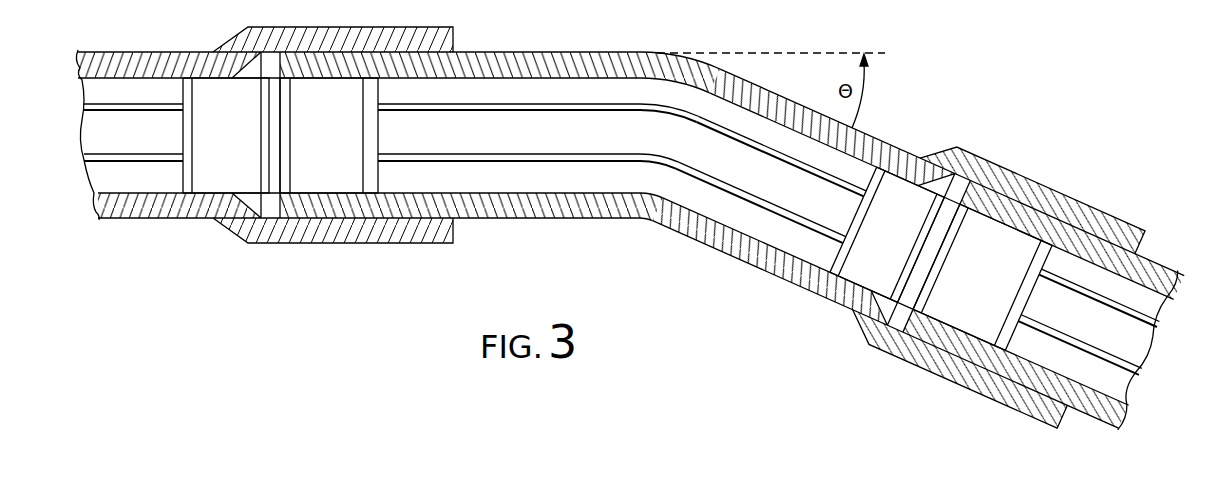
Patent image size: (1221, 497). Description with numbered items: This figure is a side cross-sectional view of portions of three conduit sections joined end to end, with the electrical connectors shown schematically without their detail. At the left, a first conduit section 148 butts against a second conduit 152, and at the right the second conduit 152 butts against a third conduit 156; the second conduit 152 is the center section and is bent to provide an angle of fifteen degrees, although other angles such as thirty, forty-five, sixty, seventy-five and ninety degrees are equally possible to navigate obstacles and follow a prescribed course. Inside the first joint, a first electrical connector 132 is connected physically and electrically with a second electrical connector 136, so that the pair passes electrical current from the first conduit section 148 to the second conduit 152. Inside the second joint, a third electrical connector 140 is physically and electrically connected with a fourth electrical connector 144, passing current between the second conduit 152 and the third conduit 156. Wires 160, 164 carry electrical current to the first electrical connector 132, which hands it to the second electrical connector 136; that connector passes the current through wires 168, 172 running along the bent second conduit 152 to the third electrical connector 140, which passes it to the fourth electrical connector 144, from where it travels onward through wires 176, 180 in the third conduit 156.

The first electrical connector 132 is at (243, 151).
The second electrical connector 136 is at (342, 151).
The third electrical connector 140 is at (908, 251).
The fourth electrical connector 144 is at (1005, 291).
The first conduit section 148 is at (190, 207).
The second conduit 152 is at (610, 210).
The third conduit 156 is at (1073, 383).
The wire 160 is at (100, 152).
The wire 164 is at (113, 112).
The wire 168 is at (490, 153).
The wire 172 is at (525, 112).
The wire 176 is at (1123, 382).
The wire 180 is at (1158, 331).